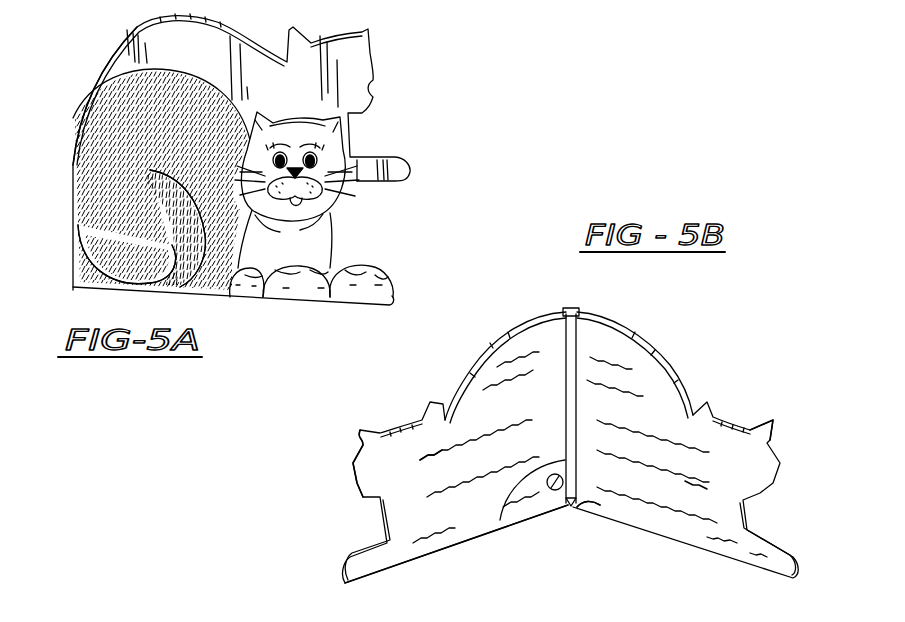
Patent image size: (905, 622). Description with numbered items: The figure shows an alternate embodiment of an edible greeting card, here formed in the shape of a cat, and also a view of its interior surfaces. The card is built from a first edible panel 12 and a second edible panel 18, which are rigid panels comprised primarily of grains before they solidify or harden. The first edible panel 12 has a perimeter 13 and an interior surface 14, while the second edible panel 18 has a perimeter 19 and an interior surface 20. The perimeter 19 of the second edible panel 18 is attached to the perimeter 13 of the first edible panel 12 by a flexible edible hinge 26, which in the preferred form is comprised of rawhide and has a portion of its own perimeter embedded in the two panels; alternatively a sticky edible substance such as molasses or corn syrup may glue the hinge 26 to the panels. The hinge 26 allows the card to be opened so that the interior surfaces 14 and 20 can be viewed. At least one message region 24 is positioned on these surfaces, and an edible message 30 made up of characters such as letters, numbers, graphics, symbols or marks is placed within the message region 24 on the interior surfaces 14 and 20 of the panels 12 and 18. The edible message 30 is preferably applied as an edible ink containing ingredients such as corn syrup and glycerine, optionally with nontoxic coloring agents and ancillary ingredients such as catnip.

In FIG. 5A, the first edible panel 12 is at (318, 292).
In FIG. 5B, the first edible panel 12 is at (363, 497).
In FIG. 5B, the perimeter 13 is at (375, 437).
In FIG. 5B, the interior surface 14 is at (443, 545).
In FIG. 5A, the second edible panel 18 is at (372, 62).
In FIG. 5B, the second edible panel 18 is at (650, 365).
In FIG. 5A, the perimeter 19 is at (112, 28).
In FIG. 5B, the perimeter 19 is at (778, 432).
In FIG. 5B, the interior surface 20 is at (645, 513).
In FIG. 5B, the message region 24 is at (535, 380).
In FIG. 5B, the flexible edible hinge 26 is at (568, 508).
In FIG. 5B, the edible message 30 is at (487, 430).